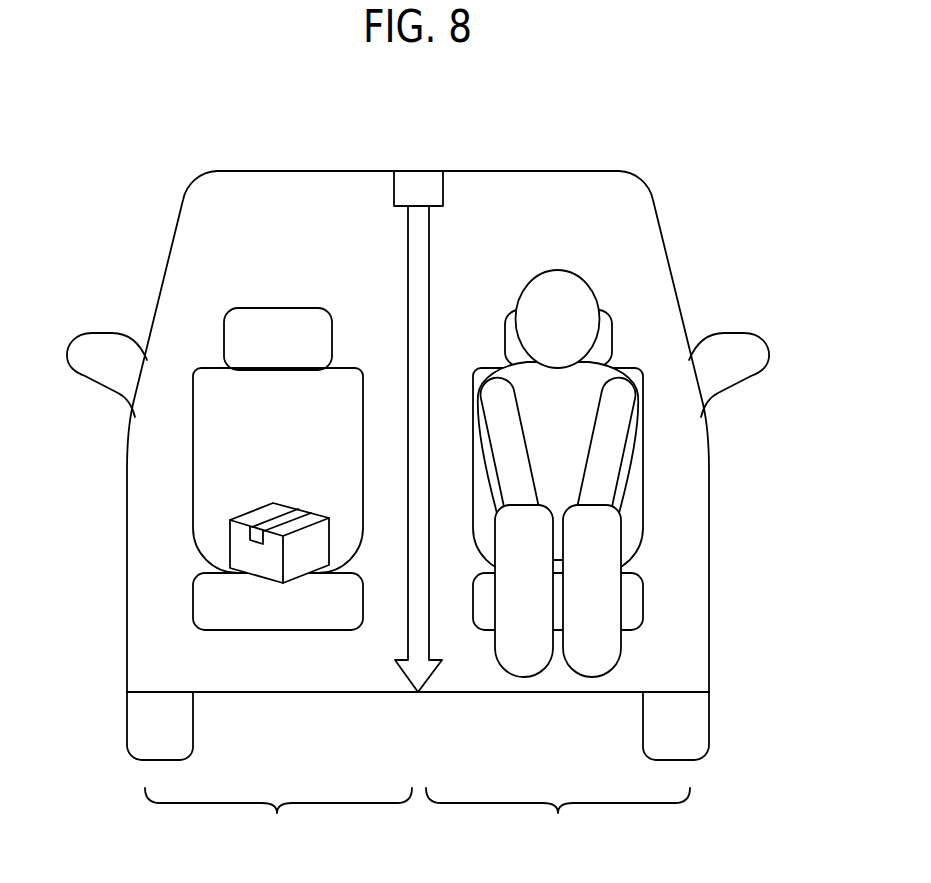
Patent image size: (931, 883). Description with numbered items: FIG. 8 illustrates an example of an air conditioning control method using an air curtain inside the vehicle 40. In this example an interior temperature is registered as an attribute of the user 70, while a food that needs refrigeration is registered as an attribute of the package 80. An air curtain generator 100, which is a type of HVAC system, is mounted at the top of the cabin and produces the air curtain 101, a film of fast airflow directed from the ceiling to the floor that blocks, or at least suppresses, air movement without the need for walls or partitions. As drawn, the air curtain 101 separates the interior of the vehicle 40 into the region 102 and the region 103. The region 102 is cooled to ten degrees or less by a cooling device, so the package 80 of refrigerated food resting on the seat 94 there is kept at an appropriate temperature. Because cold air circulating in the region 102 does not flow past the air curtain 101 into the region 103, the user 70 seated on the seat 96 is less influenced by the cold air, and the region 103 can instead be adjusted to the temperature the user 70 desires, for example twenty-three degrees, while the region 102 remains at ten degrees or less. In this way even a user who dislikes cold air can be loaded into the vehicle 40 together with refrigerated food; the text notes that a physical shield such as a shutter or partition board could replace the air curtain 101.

The vehicle 40 is at (510, 171).
The user 70 is at (593, 290).
The package 80 is at (230, 545).
The first seat 94 is at (224, 338).
The second seat 96 is at (643, 452).
The air curtain generator 100 is at (394, 190).
The air curtain 101 is at (333, 222).
The region 102 is at (278, 821).
The region 103 is at (558, 821).